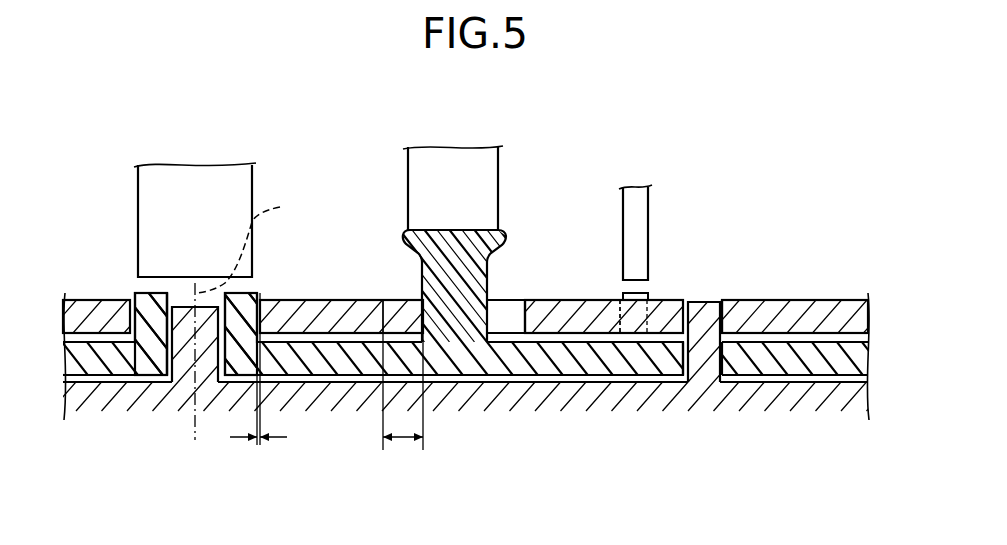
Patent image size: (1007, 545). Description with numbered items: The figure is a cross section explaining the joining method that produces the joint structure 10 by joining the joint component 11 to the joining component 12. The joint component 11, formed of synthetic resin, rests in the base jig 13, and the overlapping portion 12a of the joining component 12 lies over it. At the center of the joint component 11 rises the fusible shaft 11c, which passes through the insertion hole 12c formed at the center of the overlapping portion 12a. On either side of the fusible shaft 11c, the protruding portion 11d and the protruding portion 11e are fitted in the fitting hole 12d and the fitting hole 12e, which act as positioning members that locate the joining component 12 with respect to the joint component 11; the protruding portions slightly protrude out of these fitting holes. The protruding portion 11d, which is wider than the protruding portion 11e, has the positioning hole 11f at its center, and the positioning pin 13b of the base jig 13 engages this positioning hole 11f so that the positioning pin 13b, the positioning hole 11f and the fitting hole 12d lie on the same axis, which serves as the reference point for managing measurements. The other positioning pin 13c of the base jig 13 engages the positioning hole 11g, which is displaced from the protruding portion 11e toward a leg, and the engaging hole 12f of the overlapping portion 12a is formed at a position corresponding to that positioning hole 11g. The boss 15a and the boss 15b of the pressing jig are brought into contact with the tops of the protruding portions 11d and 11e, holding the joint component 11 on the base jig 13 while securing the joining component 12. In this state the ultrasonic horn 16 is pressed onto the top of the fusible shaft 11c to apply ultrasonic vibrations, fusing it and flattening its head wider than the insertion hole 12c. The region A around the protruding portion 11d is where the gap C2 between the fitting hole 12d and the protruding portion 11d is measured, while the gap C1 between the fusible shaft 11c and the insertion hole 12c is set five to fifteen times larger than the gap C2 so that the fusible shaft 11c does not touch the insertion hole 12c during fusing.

The joint structure 10 is at (550, 150).
The joint component 11 is at (513, 384).
The fusible shaft 11c is at (488, 283).
The protruding portion 11d is at (247, 297).
The protruding portion 11e is at (648, 293).
The positioning hole 11f is at (172, 395).
The positioning hole 11g is at (713, 375).
The joining component 12 is at (575, 294).
The overlapping portion 12a is at (565, 320).
The insertion hole 12c is at (385, 298).
The fitting hole 12d is at (137, 307).
The fitting hole 12e is at (618, 298).
The engaging hole 12f is at (720, 303).
The base jig 13 is at (452, 424).
The positioning pin 13b is at (213, 393).
The positioning pin 13c is at (703, 365).
The boss 15a is at (147, 207).
The boss 15b is at (640, 225).
The ultrasonic horn 16 is at (418, 182).
The region A is at (246, 318).
The gap C1 is at (403, 384).
The gap C2 is at (260, 445).